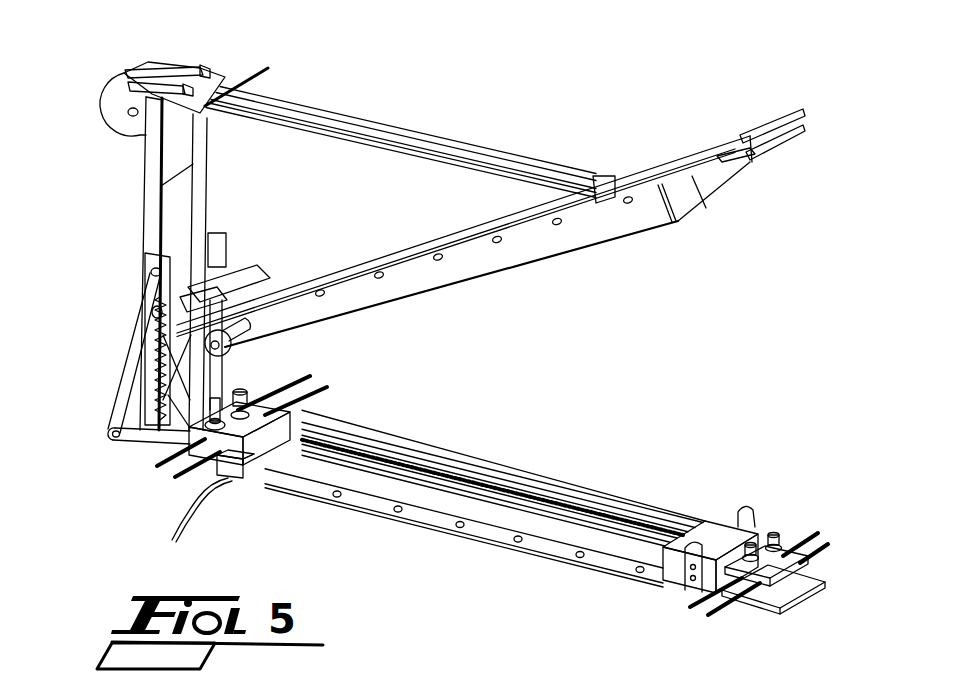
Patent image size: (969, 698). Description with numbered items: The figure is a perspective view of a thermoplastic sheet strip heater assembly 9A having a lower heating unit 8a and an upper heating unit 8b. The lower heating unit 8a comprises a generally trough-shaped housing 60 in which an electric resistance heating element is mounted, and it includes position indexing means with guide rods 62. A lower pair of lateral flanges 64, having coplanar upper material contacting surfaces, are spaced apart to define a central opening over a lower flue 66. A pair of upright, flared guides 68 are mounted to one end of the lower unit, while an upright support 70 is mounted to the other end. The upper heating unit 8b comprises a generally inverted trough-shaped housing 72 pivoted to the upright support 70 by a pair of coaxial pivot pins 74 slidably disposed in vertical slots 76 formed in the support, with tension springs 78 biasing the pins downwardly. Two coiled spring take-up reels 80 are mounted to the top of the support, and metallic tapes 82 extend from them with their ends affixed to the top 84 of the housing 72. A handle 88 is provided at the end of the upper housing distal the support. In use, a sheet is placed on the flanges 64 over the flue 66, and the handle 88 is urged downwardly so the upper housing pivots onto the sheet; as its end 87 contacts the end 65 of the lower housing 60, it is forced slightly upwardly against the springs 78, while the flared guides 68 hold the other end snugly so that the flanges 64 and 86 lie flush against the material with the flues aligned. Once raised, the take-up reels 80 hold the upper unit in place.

The trough-shaped housing 60 is at (437, 524).
The guide rods 62 is at (298, 388).
The lateral flanges 64 is at (505, 471).
The end of lower housing 65 is at (254, 434).
The lower flue 66 is at (617, 505).
The flared guides 68 is at (749, 509).
The upright support 70 is at (183, 146).
The inverted trough-shaped housing 72 is at (607, 225).
The pivot pins 74 is at (153, 323).
The vertical slots 76 is at (217, 268).
The tension springs 78 is at (157, 363).
The coiled spring take-up reels 80 is at (121, 74).
The metallic tapes 82 is at (327, 133).
The top of housing 84 is at (338, 266).
The flanges 86 is at (547, 253).
The end of upper housing 87 is at (241, 337).
The handle 88 is at (787, 116).
The lower heating unit 8a is at (783, 626).
The upper heating unit 8b is at (735, 212).
The thermoplastic sheet strip heater assembly 9A is at (574, 113).